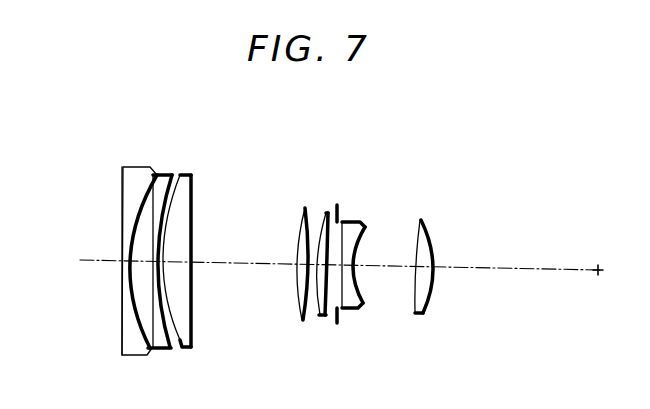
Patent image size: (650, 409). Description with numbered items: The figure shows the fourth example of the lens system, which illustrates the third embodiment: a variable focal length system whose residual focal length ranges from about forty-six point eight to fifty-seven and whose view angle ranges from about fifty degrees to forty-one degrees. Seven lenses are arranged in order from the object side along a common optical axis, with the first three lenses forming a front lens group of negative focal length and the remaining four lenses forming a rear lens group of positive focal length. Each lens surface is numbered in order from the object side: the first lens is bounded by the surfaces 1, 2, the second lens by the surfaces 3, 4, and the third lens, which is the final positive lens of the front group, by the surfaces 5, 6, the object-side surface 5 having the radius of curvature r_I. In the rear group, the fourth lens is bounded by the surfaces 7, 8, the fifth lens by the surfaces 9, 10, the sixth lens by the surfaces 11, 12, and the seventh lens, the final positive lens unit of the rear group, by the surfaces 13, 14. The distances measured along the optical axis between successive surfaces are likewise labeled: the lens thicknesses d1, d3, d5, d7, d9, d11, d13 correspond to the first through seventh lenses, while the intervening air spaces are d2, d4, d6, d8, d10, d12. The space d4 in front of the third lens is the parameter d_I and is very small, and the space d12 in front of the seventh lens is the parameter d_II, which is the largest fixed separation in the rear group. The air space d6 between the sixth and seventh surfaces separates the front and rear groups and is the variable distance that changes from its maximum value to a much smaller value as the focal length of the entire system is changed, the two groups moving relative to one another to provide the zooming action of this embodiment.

The first lens surface 1 is at (123, 176).
The second lens surface 2 is at (157, 178).
The third lens surface 3 is at (160, 174).
The fourth lens surface 4 is at (168, 178).
The fifth lens surface 5 is at (180, 176).
The sixth lens surface 6 is at (192, 176).
The seventh lens surface 7 is at (298, 218).
The eighth lens surface 8 is at (307, 211).
The ninth lens surface 9 is at (323, 213).
The tenth lens surface 10 is at (329, 211).
The eleventh lens surface 11 is at (344, 220).
The twelfth lens surface 12 is at (366, 226).
The thirteenth lens surface 13 is at (417, 232).
The fourteenth lens surface 14 is at (428, 236).
The axial thickness of first lens d1 is at (126, 262).
The axial air space between first and second lenses d2 is at (146, 284).
The axial thickness of second lens d3 is at (150, 268).
The axial air space to the final positive lens of the front group d4 is at (178, 347).
The axial thickness of third lens d5 is at (187, 262).
The variable air space between front and rear lens groups d6 is at (212, 266).
The axial thickness of fourth lens d7 is at (296, 260).
The axial air space between fourth and fifth lenses d8 is at (304, 268).
The axial thickness of fifth lens d9 is at (314, 263).
The axial air space between fifth and sixth lenses d10 is at (333, 263).
The axial thickness of sixth lens d11 is at (351, 265).
The axial air space to the final positive lens unit of the rear group d12 is at (392, 268).
The axial thickness of seventh lens d13 is at (424, 270).